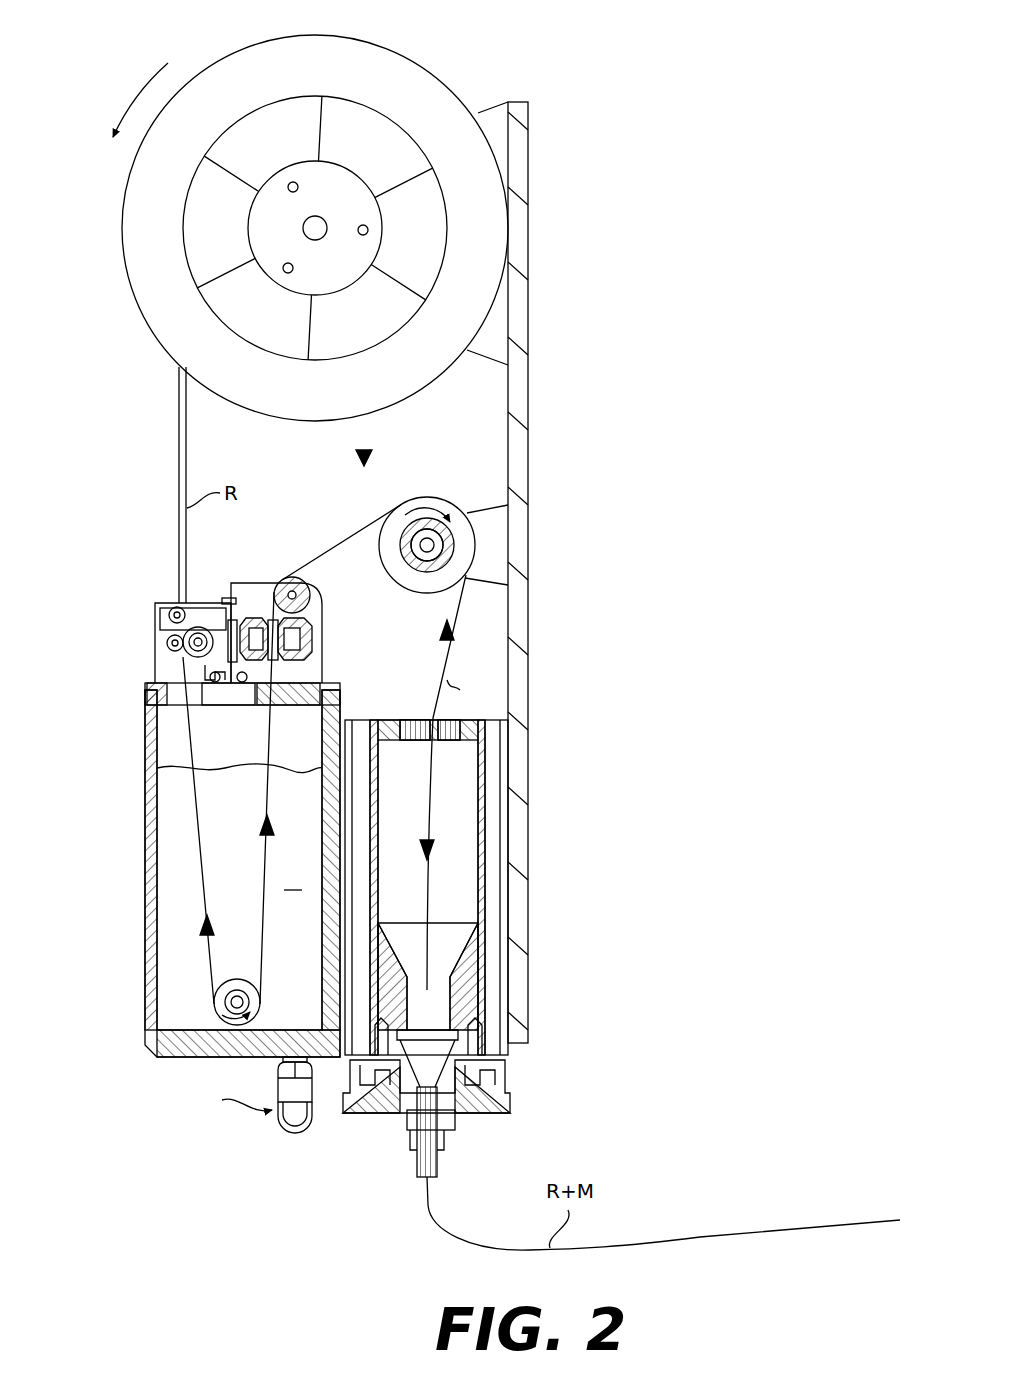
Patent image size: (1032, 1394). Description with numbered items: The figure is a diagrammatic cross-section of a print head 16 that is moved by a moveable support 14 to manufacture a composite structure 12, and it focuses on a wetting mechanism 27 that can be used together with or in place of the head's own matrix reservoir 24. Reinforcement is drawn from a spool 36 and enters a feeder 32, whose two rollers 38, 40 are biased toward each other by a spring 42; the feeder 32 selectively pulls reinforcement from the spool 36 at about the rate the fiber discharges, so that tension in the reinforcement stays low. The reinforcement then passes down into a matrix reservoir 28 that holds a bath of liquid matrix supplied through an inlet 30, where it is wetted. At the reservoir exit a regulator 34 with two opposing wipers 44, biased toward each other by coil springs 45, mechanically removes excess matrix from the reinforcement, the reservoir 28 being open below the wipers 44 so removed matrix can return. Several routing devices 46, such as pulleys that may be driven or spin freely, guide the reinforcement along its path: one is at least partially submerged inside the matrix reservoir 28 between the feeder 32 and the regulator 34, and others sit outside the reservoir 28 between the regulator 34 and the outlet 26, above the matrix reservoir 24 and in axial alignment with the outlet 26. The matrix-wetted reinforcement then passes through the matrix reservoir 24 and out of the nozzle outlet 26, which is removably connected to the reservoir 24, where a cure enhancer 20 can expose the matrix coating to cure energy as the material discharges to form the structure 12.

The composite structure 12 is at (785, 1232).
The moveable support 14 is at (522, 437).
The print head 16 is at (505, 1136).
The cure enhancer 20 is at (375, 1115).
The matrix reservoir 24 is at (482, 835).
The outlet 26 is at (415, 1160).
The wetting mechanism 27 is at (105, 1078).
The matrix reservoir 28 is at (165, 925).
The inlet 30 is at (290, 1130).
The feeder 32 is at (156, 775).
The regulator 34 is at (328, 608).
The spool 36 is at (278, 154).
The roller 38 is at (200, 612).
The roller 40 is at (177, 650).
The spring 42 is at (233, 622).
The wiper 44 is at (290, 628).
The coil spring 45 is at (312, 642).
The routing device 46 is at (437, 500).